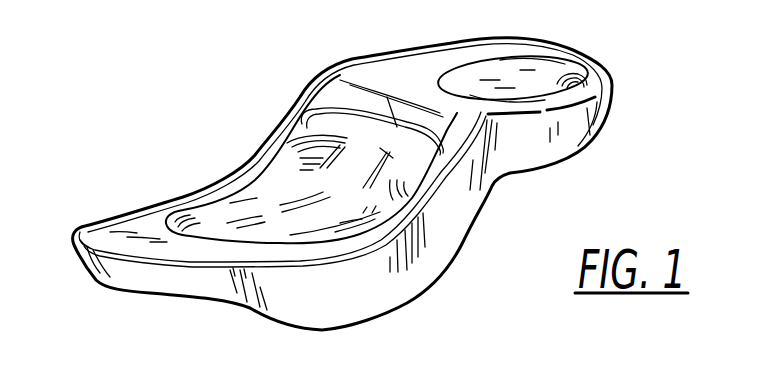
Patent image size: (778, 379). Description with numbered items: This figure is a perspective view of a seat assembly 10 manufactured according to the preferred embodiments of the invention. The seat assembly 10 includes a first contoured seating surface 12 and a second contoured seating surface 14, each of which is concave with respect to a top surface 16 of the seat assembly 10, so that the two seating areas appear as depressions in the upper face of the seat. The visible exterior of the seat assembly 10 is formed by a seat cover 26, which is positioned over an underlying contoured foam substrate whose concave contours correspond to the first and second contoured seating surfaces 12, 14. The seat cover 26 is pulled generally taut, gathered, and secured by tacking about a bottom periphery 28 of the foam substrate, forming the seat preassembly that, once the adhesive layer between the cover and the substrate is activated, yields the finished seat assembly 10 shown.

The seat assembly 10 is at (248, 100).
The first contoured seating surface 12 is at (347, 220).
The second contoured seating surface 14 is at (535, 80).
The top surface 16 is at (95, 232).
The seat cover 26 is at (340, 303).
The bottom periphery 28 is at (472, 228).